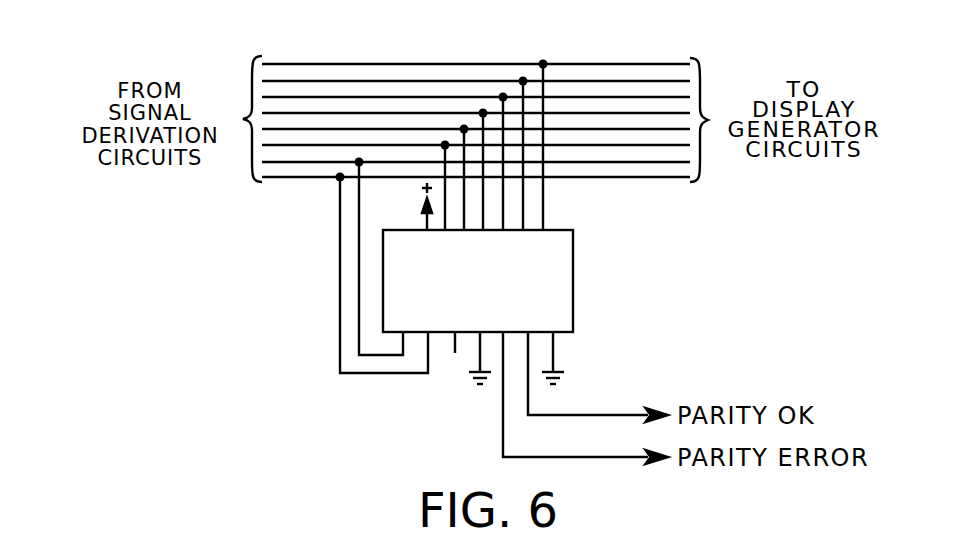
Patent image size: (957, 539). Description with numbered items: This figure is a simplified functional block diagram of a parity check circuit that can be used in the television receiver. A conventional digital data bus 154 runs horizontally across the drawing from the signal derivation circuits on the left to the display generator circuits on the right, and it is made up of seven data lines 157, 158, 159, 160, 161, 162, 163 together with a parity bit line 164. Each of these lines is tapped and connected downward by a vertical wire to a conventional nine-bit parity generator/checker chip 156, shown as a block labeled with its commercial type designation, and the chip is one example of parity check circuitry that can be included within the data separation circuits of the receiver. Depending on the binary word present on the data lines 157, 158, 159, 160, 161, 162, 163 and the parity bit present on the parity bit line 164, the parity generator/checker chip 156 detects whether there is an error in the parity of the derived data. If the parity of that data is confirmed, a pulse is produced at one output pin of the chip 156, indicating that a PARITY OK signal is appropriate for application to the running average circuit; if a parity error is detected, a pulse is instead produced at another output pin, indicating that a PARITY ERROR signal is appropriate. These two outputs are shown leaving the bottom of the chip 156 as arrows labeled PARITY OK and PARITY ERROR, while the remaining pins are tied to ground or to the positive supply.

The digital data bus 154 is at (716, 101).
The parity generator/checker chip 156 is at (573, 277).
The data line 157 is at (281, 64).
The data line 158 is at (316, 81).
The data line 159 is at (355, 97).
The data line 160 is at (382, 113).
The data line 161 is at (425, 145).
The data line 162 is at (430, 158).
The data line 163 is at (510, 68).
The parity bit line 164 is at (282, 178).